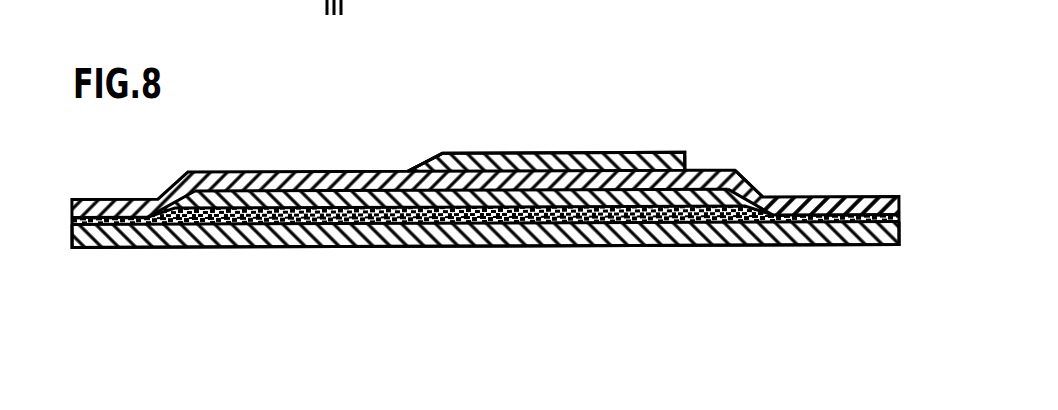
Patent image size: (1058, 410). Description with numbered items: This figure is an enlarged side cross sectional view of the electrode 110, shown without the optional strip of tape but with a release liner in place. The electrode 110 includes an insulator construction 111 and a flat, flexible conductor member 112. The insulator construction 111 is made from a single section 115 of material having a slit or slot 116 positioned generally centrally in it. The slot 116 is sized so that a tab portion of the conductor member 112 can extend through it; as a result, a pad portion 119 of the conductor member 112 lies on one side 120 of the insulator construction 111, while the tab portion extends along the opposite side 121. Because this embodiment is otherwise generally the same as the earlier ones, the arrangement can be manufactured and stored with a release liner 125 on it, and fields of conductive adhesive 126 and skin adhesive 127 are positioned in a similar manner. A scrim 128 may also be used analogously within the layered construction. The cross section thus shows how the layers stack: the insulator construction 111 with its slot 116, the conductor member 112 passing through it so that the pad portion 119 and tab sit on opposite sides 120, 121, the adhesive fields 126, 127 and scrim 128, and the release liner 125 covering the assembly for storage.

The electrode 110 is at (737, 65).
The insulator construction 111 is at (286, 166).
The conductor member 112 is at (642, 150).
The single section of material 115 is at (843, 197).
The slot 116 is at (410, 176).
The pad portion 119 is at (313, 233).
The one side 120 is at (134, 238).
The opposite side 121 is at (729, 172).
The release liner 125 is at (392, 215).
The field of conductive adhesive 126 is at (487, 215).
The field of skin adhesive 127 is at (175, 236).
The scrim 128 is at (212, 191).